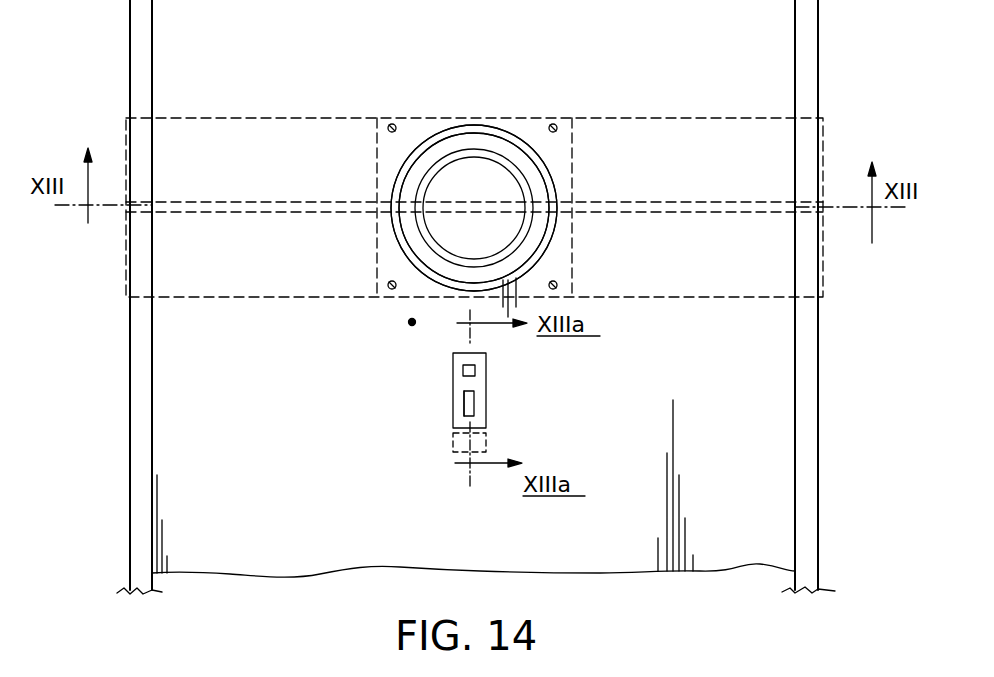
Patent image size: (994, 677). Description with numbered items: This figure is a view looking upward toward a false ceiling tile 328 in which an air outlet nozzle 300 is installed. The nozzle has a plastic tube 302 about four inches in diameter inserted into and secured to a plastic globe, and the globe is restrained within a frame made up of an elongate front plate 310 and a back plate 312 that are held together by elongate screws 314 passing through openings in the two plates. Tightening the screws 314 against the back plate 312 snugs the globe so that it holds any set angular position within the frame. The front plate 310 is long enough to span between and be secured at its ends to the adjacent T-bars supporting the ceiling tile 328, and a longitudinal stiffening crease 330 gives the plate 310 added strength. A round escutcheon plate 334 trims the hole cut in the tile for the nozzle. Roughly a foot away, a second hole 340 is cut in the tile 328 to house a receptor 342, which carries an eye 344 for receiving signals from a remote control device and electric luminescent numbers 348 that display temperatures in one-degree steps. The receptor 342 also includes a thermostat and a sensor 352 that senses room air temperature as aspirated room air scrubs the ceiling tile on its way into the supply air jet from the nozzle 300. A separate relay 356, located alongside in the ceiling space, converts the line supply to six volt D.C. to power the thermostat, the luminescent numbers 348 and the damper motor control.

The air outlet nozzle 300 is at (392, 167).
The plastic tube 302 is at (522, 196).
The front plate 310 is at (775, 156).
The back plate 312 is at (452, 92).
The screws 314 is at (392, 118).
The ceiling tile 328 is at (755, 461).
The longitudinal stiffening crease 330 is at (262, 215).
The escutcheon plate 334 is at (548, 242).
The second hole 340 is at (481, 388).
The receptor 342 is at (487, 412).
The eye 344 is at (465, 371).
The electric luminescent numbers 348 is at (463, 393).
The sensor 352 is at (408, 322).
The relay 356 is at (487, 445).